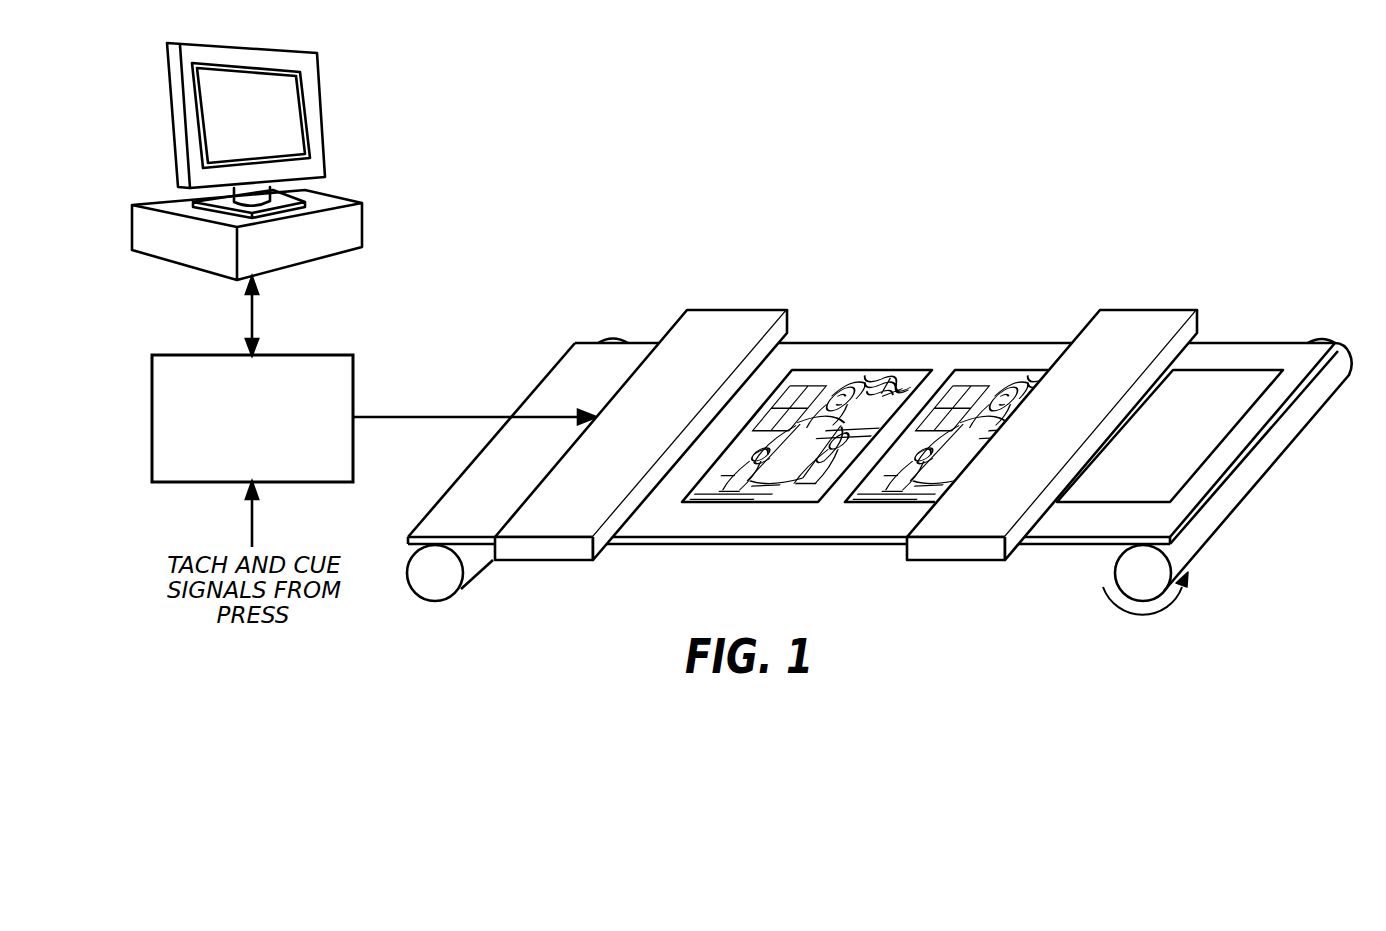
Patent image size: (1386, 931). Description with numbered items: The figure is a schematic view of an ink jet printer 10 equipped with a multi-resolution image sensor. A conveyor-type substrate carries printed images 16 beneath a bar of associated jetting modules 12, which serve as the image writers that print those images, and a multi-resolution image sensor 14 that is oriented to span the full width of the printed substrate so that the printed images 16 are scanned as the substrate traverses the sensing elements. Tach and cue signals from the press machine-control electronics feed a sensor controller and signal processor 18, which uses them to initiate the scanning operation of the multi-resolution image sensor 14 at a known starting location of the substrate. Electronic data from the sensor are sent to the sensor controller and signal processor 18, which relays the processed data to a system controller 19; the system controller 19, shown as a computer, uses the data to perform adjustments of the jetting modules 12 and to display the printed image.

The ink jet printer 10 is at (519, 378).
The jetting modules 12 is at (1108, 310).
The multi-resolution image sensor 14 is at (717, 310).
The printed images 16 is at (857, 370).
The sensor controller and signal processor 18 is at (207, 355).
The system controller 19 is at (362, 228).